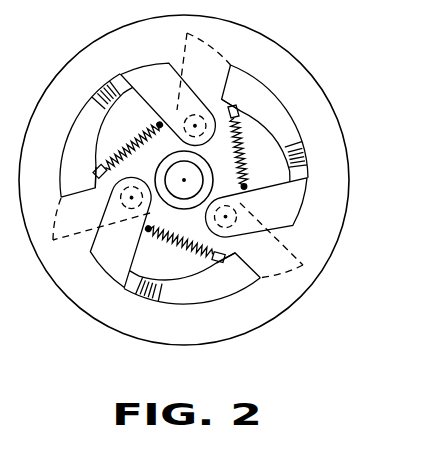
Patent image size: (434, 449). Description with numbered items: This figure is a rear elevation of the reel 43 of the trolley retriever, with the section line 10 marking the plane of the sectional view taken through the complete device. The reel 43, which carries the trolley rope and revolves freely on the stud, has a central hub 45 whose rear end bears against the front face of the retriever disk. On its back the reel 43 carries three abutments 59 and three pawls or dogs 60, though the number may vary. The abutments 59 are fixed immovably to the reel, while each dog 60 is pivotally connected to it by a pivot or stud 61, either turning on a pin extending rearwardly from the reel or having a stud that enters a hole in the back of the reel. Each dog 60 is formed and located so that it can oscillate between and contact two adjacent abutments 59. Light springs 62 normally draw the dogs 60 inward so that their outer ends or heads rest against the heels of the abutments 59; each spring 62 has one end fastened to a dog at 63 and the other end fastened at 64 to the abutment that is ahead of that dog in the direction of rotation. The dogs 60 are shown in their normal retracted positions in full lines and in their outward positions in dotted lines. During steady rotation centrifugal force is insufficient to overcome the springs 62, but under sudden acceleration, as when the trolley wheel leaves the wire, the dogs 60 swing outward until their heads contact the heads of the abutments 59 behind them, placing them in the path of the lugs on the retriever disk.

The section line 10 is at (152, 343).
The reel 43 is at (346, 186).
The reel hub 45 is at (171, 205).
The abutment 59 is at (87, 119).
The dog 60 is at (311, 208).
The pivot or stud 61 is at (204, 136).
The spring 62 is at (178, 265).
The spring fastening on dog 63 is at (157, 117).
The spring fastening on abutment 64 is at (246, 102).